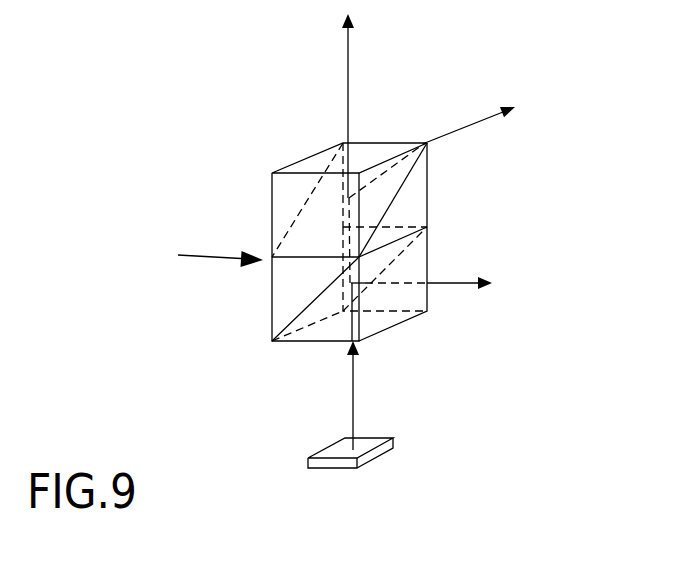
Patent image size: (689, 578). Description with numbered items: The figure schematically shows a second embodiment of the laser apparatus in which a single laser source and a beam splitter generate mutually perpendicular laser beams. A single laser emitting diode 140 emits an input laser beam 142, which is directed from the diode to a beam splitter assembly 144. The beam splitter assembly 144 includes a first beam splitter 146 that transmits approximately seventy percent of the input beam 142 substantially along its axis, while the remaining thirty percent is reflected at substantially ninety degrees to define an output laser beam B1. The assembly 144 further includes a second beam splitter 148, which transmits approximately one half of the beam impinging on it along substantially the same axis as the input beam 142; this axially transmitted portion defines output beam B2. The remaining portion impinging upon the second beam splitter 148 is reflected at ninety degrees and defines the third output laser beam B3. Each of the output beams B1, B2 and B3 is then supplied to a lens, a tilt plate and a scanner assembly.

The laser emitting diode 140 is at (308, 460).
The input laser beam 142 is at (352, 397).
The beam splitter assembly 144 is at (246, 255).
The first beam splitter 146 is at (270, 300).
The second beam splitter 148 is at (267, 208).
The output laser beam B1 is at (455, 288).
The output beam B2 is at (347, 72).
The third output laser beam B3 is at (455, 136).